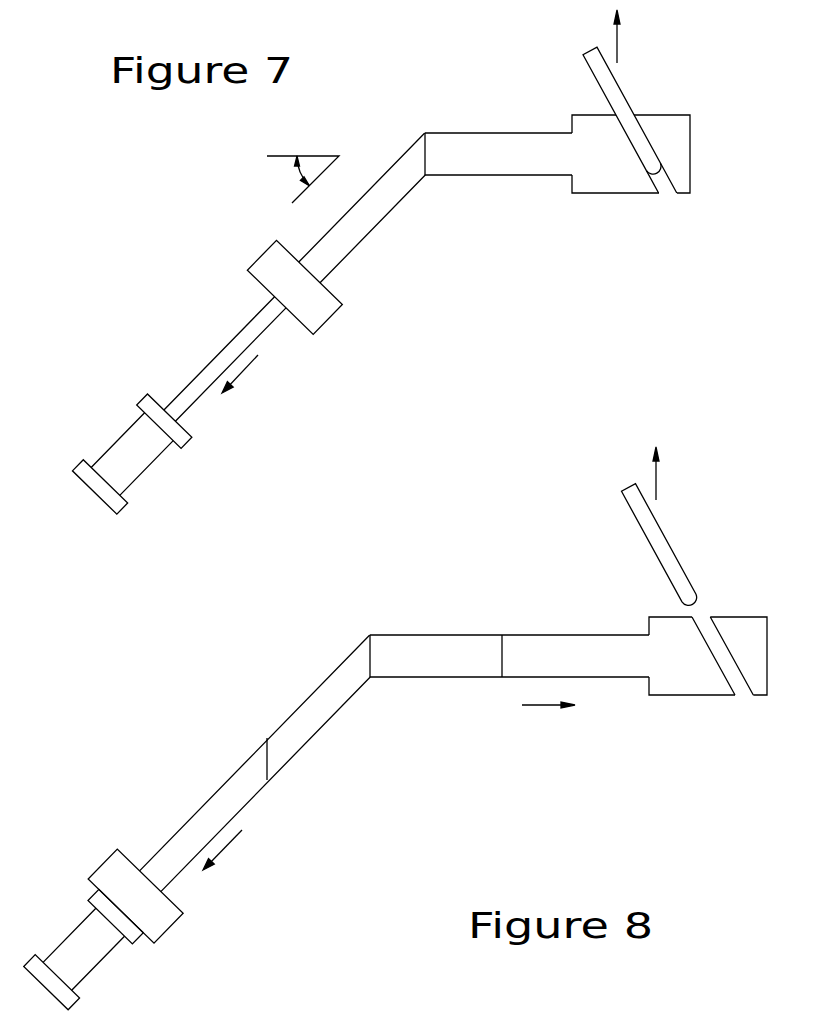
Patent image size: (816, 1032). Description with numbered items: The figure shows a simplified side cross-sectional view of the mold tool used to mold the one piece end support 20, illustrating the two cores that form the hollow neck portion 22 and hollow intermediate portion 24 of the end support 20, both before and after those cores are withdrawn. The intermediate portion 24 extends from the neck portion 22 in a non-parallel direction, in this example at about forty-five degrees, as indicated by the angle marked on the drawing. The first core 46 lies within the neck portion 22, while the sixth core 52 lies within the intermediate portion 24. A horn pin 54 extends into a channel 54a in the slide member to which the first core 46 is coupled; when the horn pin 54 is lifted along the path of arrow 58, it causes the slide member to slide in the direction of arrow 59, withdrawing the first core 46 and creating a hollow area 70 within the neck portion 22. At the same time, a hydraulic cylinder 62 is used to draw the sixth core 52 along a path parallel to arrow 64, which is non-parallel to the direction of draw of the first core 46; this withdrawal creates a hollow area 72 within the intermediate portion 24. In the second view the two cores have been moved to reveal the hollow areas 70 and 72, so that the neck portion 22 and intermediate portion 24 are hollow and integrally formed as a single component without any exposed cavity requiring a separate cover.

In FIG. 7, the one piece end support 20 is at (437, 218).
In FIG. 8, the one piece end support 20 is at (342, 612).
In FIG. 7, the neck portion 22 is at (490, 131).
In FIG. 8, the neck portion 22 is at (404, 635).
In FIG. 7, the intermediate portion 24 is at (411, 146).
In FIG. 8, the intermediate portion 24 is at (310, 697).
In FIG. 7, the first core 46 is at (524, 163).
In FIG. 8, the first core 46 is at (607, 667).
In FIG. 7, the sixth core 52 is at (350, 240).
In FIG. 8, the sixth core 52 is at (238, 797).
In FIG. 7, the horn pin 54 is at (601, 88).
In FIG. 8, the horn pin 54 is at (632, 510).
In FIG. 7, the channel 54a is at (673, 190).
In FIG. 8, the channel 54a is at (748, 688).
In FIG. 7, the arrow 58 is at (617, 38).
In FIG. 8, the arrow 58 is at (656, 475).
In FIG. 8, the arrow 59 is at (548, 705).
In FIG. 7, the hydraulic cylinder 62 is at (130, 437).
In FIG. 8, the hydraulic cylinder 62 is at (83, 935).
In FIG. 7, the arrow 64 is at (240, 375).
In FIG. 8, the arrow 64 is at (225, 850).
In FIG. 8, the hollow area 70 is at (467, 638).
In FIG. 8, the hollow area 72 is at (303, 732).